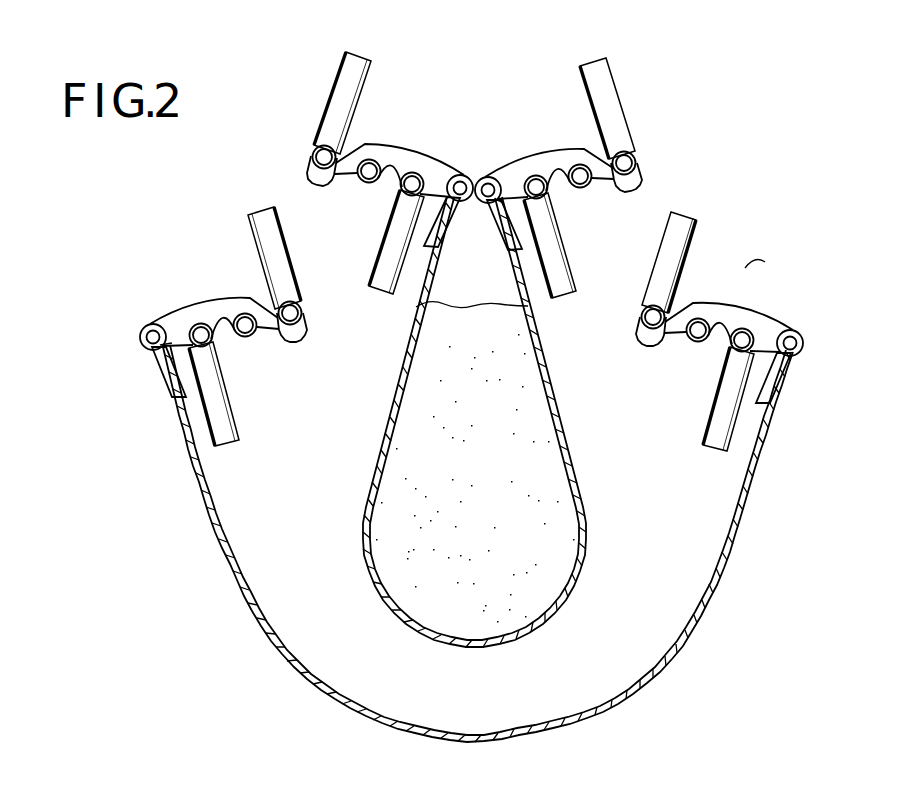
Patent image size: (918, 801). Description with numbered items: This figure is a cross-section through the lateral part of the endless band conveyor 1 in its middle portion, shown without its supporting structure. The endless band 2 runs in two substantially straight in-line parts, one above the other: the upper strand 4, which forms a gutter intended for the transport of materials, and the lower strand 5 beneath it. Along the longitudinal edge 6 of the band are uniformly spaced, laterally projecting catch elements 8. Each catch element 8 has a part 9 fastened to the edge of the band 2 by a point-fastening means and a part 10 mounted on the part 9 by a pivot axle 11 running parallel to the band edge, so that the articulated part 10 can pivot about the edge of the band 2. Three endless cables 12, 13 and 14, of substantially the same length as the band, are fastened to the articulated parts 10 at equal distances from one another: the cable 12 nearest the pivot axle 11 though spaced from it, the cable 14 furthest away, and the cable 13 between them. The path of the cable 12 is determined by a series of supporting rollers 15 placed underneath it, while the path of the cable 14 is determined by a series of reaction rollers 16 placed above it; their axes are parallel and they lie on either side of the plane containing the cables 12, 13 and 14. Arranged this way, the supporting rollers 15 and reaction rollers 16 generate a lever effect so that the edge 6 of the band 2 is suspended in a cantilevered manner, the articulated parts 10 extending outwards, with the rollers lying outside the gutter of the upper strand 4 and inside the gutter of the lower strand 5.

The endless band conveyor 1 is at (747, 267).
The endless band 2 is at (221, 569).
The upper strand 4 is at (368, 573).
The lower strand 5 is at (268, 640).
The longitudinal edge 6 is at (147, 347).
The catch element 8 is at (165, 315).
The fastened part 9 is at (163, 367).
The articulated part 10 is at (217, 308).
The pivot axle 11 is at (148, 332).
The endless cable 12 is at (200, 312).
The endless cable 13 is at (242, 312).
The endless cable 14 is at (302, 310).
The supporting roller 15 is at (223, 417).
The reaction roller 16 is at (272, 233).